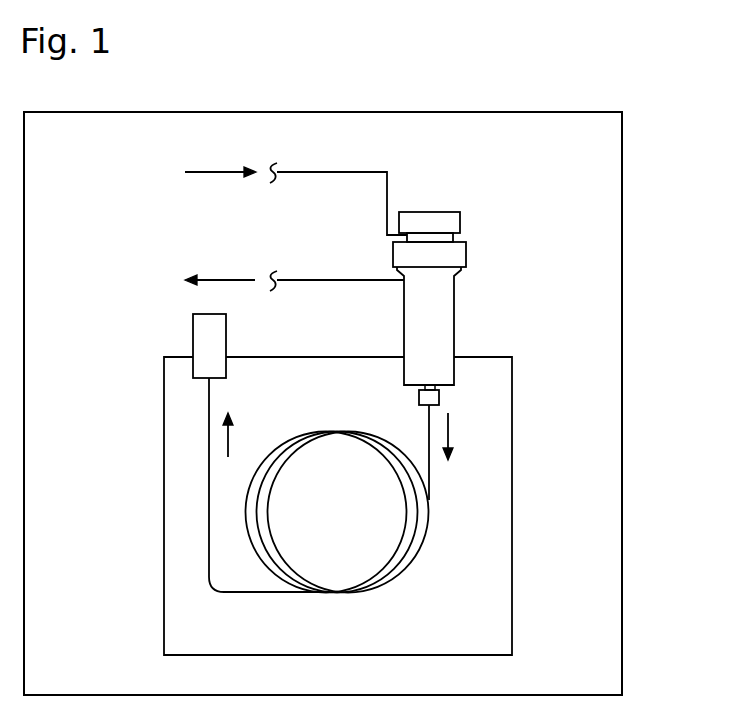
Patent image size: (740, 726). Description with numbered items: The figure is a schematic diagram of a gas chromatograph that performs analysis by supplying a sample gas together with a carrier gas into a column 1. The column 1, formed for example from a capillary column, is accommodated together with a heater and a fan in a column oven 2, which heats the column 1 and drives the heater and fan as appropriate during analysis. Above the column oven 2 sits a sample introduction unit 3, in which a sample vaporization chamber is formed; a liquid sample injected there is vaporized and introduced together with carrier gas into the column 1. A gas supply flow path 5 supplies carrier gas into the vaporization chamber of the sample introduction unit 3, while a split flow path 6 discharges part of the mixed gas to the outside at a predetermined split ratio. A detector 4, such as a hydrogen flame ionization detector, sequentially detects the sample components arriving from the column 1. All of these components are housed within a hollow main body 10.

The column 1 is at (402, 568).
The column oven 2 is at (163, 555).
The sample introduction unit 3 is at (456, 315).
The detector 4 is at (193, 333).
The gas supply flow path 5 is at (323, 172).
The split flow path 6 is at (323, 280).
The main body 10 is at (622, 247).